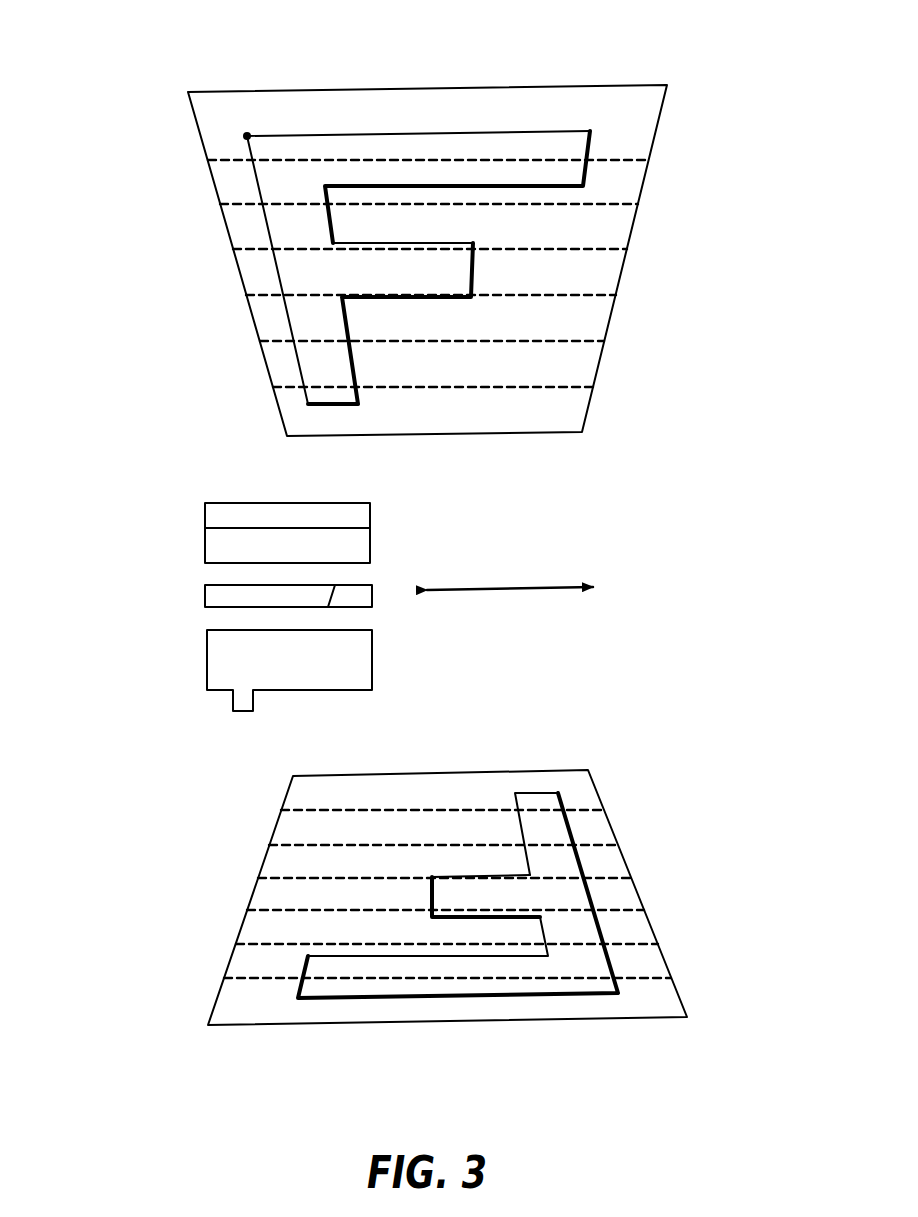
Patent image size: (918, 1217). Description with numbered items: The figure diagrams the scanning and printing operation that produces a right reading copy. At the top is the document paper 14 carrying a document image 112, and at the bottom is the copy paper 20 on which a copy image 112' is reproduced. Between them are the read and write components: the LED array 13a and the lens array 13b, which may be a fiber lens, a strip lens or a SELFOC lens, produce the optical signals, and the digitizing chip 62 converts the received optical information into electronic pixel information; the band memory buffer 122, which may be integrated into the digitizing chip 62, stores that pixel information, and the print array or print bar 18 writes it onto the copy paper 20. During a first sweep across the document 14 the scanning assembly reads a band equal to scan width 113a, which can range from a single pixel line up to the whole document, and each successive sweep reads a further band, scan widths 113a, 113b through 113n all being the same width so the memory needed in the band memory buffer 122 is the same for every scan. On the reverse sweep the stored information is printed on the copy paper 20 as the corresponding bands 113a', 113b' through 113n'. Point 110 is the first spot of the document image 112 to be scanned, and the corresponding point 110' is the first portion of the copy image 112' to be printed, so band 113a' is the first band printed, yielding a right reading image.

The document paper 14 is at (208, 284).
The point 110 is at (336, 238).
The document image 112 is at (418, 75).
The scan width 113a is at (496, 141).
The scan width 113b is at (497, 200).
The scan width 113n is at (494, 438).
The LED array 13a is at (353, 518).
The lens array 13b is at (218, 547).
The digitizing chip 62 is at (218, 597).
The band memory buffer 122 is at (360, 593).
The print array or print bar 18 is at (222, 663).
The copy paper 20 is at (235, 885).
The printed band width 113n' is at (377, 768).
The printed band width 113b' is at (376, 928).
The printed band width 113a' is at (374, 973).
The copy image 112' is at (611, 843).
The point 110' is at (525, 895).